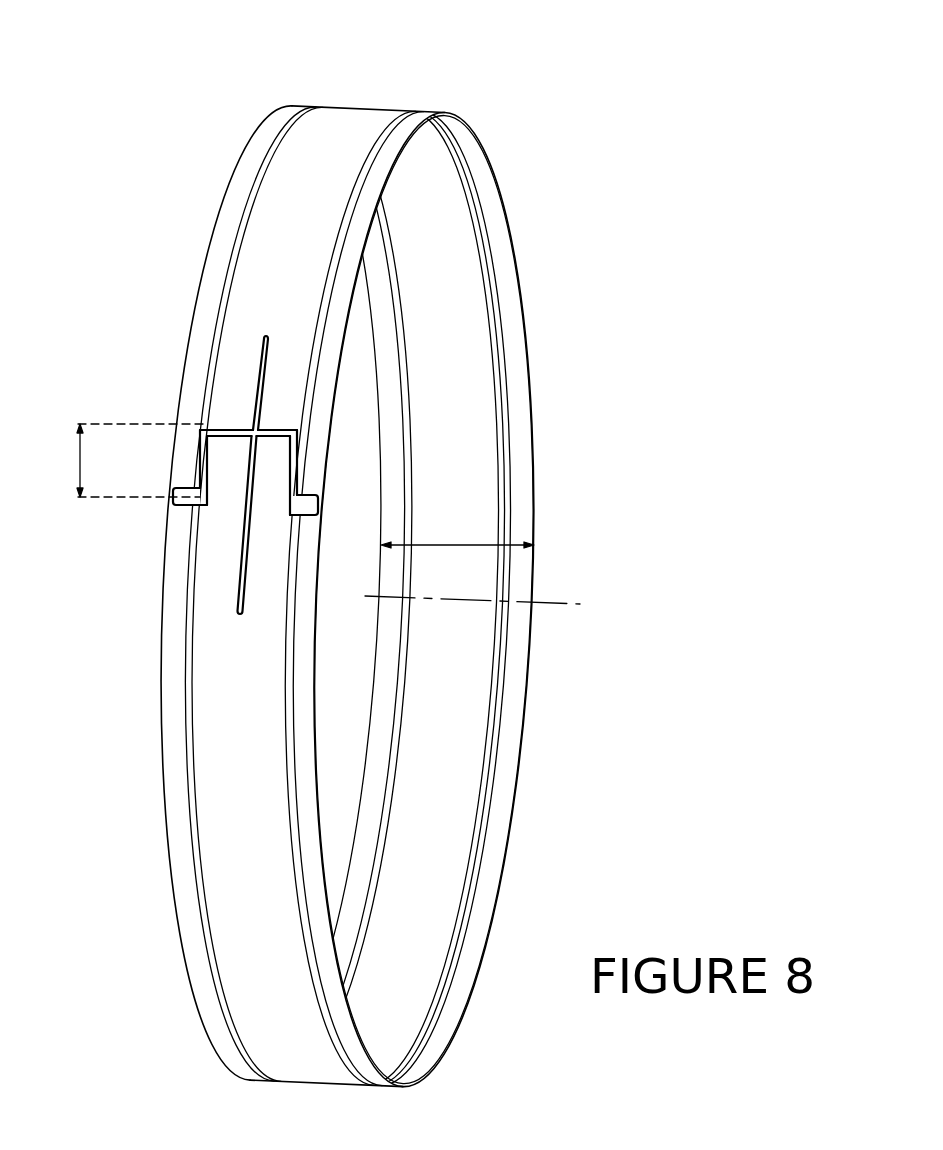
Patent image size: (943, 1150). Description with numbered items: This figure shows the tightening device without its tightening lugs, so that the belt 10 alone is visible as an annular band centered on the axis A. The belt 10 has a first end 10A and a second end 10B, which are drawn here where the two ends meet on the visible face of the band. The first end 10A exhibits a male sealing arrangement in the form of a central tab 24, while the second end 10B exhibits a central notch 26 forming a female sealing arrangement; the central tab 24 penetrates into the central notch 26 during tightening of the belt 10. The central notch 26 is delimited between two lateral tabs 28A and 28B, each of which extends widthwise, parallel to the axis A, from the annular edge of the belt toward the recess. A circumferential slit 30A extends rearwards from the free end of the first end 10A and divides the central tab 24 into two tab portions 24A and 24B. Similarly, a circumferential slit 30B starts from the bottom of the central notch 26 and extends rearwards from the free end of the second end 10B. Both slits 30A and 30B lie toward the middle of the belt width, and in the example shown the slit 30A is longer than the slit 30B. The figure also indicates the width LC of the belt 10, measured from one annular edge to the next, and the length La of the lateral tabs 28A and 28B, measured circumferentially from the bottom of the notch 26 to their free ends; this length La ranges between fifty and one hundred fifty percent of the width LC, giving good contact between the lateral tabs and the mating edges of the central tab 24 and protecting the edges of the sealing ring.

The belt 10 is at (316, 558).
The first end of the belt 10A is at (161, 538).
The second end of the belt 10B is at (167, 459).
The central tab 24 is at (236, 460).
The tab portion 24A is at (220, 458).
The tab portion 24B is at (272, 468).
The central notch 26 is at (223, 430).
The lateral tab 28A is at (181, 488).
The lateral tab 28B is at (310, 494).
The circumferential slit 30A is at (239, 616).
The circumferential slit 30B is at (265, 334).
The length of the lateral tabs La is at (78, 457).
The width of the belt LC is at (452, 543).
The axis A is at (482, 606).